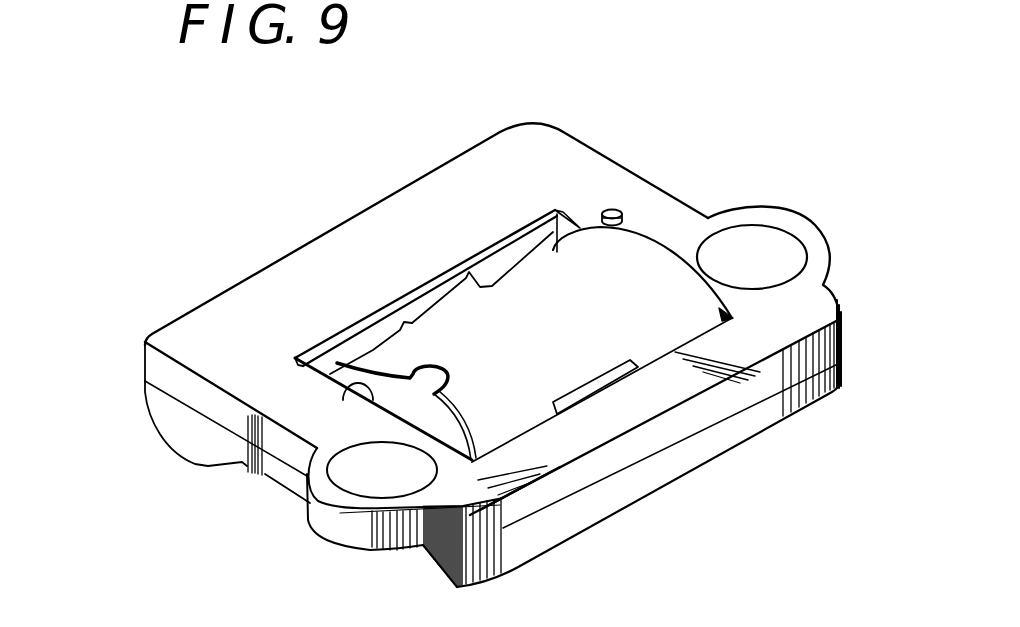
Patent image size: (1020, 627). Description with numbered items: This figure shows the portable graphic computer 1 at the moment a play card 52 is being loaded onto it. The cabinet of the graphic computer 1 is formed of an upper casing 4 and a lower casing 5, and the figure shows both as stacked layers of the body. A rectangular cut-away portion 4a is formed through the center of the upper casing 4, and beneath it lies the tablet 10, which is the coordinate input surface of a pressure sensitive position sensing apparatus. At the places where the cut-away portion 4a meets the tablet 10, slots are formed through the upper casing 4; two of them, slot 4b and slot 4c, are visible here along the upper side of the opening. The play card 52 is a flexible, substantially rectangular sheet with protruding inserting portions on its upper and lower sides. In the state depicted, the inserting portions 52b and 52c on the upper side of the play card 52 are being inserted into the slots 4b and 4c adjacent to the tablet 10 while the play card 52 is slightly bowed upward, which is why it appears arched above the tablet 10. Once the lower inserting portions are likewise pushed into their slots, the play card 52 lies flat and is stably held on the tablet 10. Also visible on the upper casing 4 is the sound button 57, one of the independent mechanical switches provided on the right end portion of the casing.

The graphic computer 1 is at (445, 355).
The upper casing 4 is at (465, 340).
The cut-away portion 4a is at (362, 392).
The slot 4b is at (400, 317).
The slot 4c is at (507, 264).
The lower casing 5 is at (465, 475).
The tablet 10 is at (513, 500).
The play card 52 is at (488, 292).
The inserting portion 52b is at (343, 363).
The inserting portion 52c is at (563, 213).
The sound button 57 is at (612, 208).